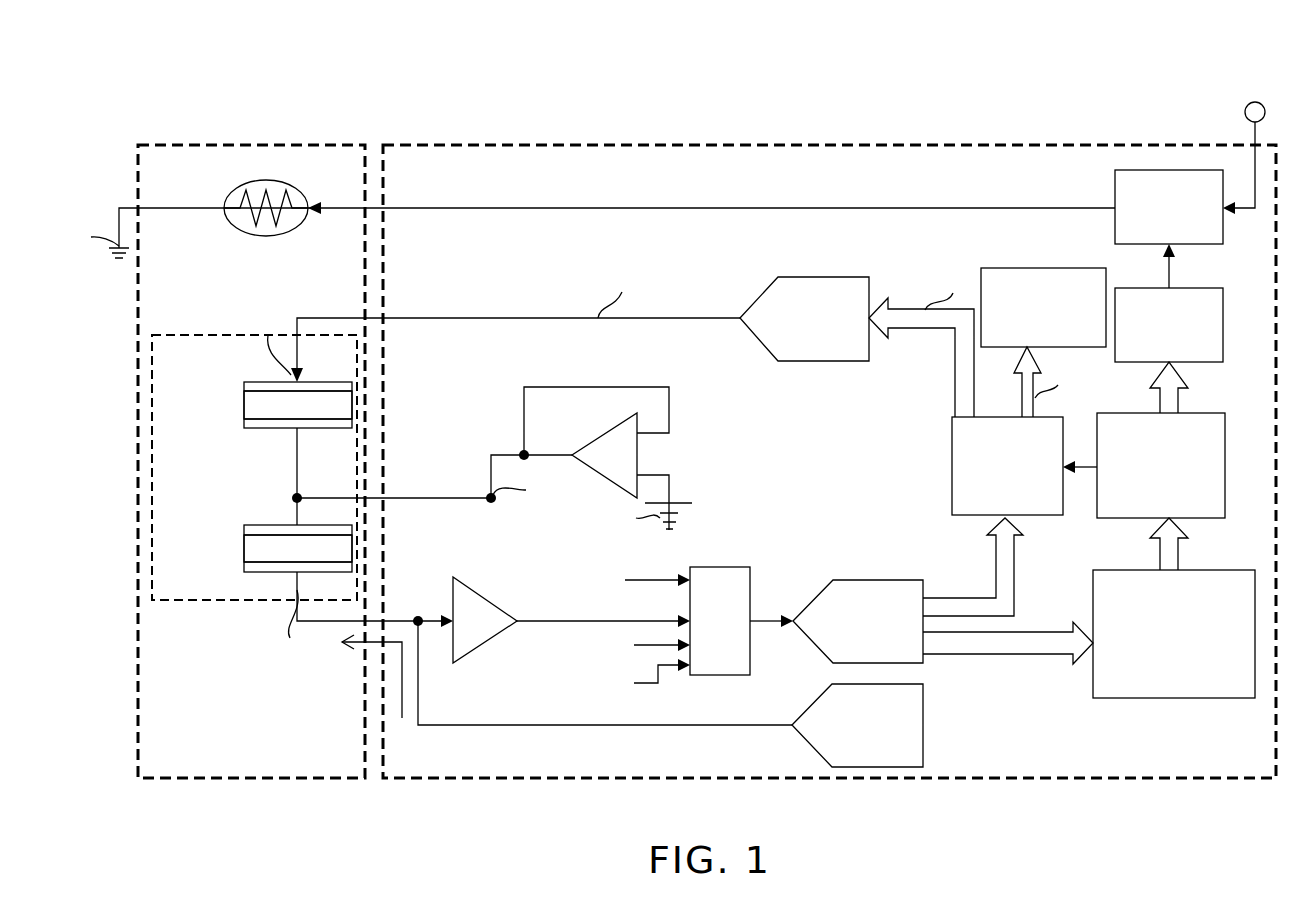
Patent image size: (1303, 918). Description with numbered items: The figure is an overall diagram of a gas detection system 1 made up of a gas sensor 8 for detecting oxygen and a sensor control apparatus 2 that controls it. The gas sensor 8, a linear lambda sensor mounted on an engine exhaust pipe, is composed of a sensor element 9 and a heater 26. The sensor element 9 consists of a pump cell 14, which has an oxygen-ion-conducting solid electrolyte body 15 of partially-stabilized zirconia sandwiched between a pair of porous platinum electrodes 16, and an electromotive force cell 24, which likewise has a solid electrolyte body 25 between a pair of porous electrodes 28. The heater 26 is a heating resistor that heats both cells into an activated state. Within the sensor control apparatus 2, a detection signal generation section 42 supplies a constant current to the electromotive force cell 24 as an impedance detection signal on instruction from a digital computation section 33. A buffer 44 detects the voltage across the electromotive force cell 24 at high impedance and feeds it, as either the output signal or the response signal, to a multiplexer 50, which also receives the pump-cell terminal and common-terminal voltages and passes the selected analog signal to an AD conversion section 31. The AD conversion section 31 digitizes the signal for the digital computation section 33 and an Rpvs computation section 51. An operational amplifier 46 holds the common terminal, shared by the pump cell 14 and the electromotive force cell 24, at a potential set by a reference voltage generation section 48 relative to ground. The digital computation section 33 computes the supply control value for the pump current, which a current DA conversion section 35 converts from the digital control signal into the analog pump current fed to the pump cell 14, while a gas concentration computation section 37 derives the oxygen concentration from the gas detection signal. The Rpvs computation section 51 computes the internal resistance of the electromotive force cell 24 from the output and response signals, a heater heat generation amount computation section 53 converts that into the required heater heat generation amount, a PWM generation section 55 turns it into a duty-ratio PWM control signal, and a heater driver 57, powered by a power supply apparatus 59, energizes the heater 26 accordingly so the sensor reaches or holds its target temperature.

The gas detection system 1 is at (672, 104).
The sensor control apparatus 2 is at (893, 146).
The gas sensor 8 is at (262, 146).
The sensor element 9 is at (216, 605).
The pump cell 14 is at (255, 407).
The solid electrolyte body 15 is at (278, 405).
The porous electrodes 16 is at (246, 386).
The electromotive force cell 24 is at (255, 550).
The solid electrolyte body 25 is at (278, 548).
The heater 26 is at (237, 234).
The porous electrodes 28 is at (246, 529).
The AD conversion section 31 is at (895, 578).
The digital computation section 33 is at (952, 447).
The current DA conversion section 35 is at (838, 275).
The gas concentration computation section 37 is at (1030, 267).
The detection signal generation section 42 is at (923, 727).
The buffer 44 is at (485, 645).
The operational amplifier 46 is at (608, 430).
The reference voltage generation section 48 is at (685, 501).
The multiplexer 50 is at (731, 567).
The Rpvs computation section 51 is at (1122, 570).
The heater heat generation amount computation section 53 is at (1225, 495).
The PWM generation section 55 is at (1223, 335).
The heater driver 57 is at (1223, 228).
The power supply apparatus 59 is at (1245, 111).